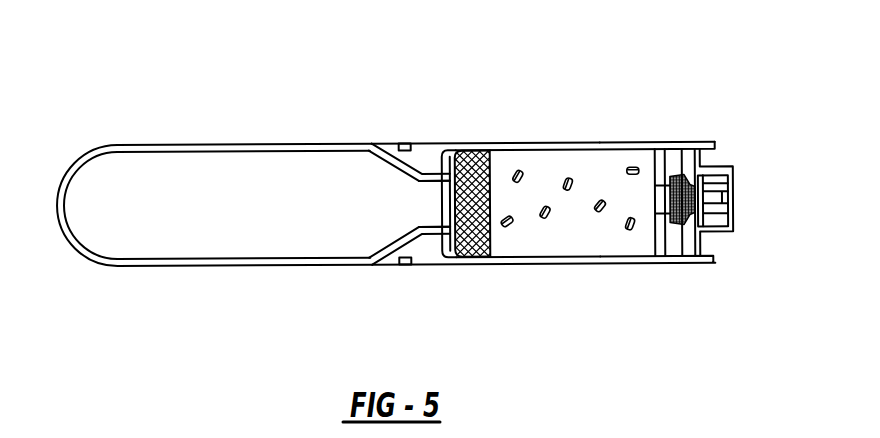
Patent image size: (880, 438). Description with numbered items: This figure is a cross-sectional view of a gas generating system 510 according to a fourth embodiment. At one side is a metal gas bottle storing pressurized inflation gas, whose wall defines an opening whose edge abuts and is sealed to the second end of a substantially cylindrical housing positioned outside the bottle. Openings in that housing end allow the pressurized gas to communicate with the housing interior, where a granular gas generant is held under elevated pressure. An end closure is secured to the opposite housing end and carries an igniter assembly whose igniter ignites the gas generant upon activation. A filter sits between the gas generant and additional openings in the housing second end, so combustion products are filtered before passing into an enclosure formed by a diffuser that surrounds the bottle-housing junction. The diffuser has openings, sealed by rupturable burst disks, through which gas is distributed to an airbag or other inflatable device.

The gas generating system 510 is at (172, 364).